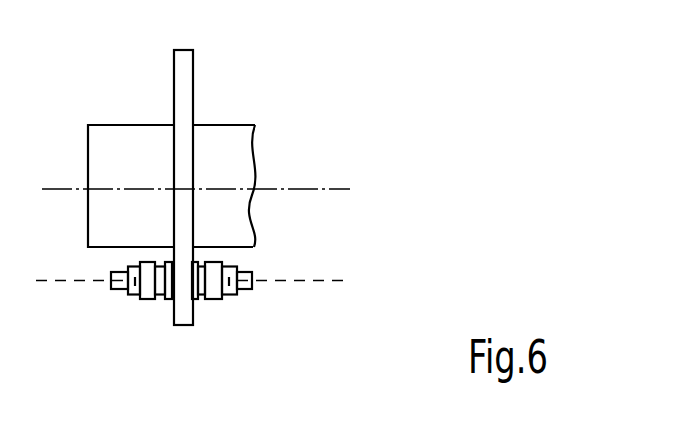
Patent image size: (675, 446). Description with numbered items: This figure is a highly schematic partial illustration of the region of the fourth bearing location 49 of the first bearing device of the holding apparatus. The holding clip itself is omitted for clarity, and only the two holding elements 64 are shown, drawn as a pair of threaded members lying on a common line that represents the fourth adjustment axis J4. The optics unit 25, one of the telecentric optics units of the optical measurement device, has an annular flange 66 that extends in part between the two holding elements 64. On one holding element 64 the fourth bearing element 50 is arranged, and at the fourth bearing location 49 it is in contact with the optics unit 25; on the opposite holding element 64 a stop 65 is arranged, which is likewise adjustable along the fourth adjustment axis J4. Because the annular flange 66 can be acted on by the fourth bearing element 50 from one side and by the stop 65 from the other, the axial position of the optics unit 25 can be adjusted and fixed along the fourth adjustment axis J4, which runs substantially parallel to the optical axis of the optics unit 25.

The annular flange 66 is at (182, 99).
The optics unit 25 is at (213, 137).
The fourth adjustment axis J4 is at (328, 281).
The holding element 64 is at (142, 297).
The fourth bearing element 50 is at (163, 297).
The fourth bearing location 49 is at (166, 303).
The stop 65 is at (195, 298).